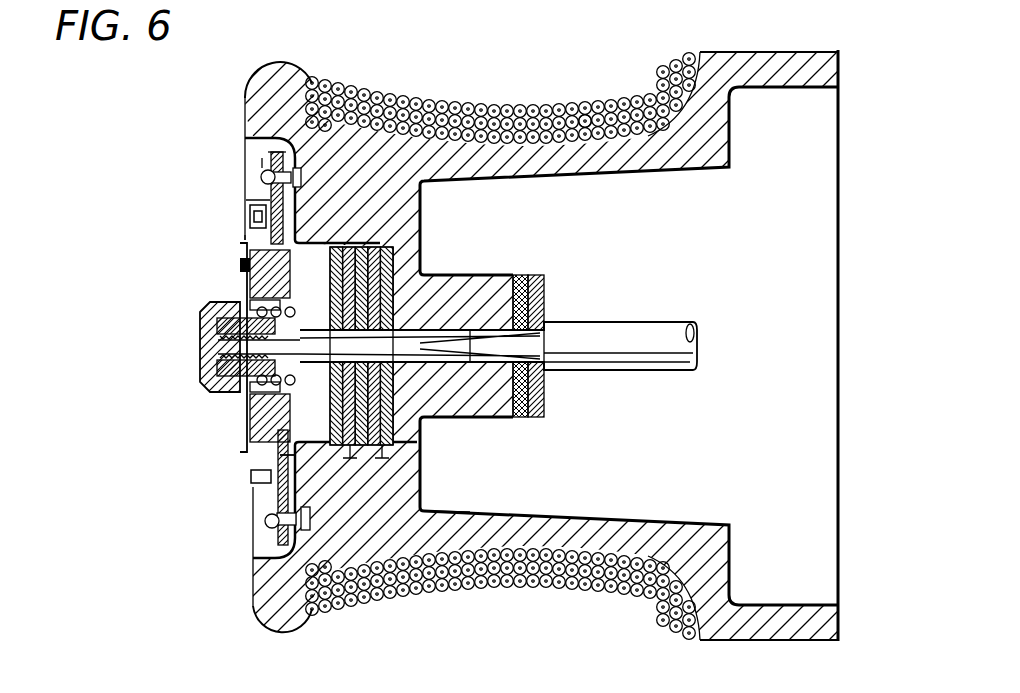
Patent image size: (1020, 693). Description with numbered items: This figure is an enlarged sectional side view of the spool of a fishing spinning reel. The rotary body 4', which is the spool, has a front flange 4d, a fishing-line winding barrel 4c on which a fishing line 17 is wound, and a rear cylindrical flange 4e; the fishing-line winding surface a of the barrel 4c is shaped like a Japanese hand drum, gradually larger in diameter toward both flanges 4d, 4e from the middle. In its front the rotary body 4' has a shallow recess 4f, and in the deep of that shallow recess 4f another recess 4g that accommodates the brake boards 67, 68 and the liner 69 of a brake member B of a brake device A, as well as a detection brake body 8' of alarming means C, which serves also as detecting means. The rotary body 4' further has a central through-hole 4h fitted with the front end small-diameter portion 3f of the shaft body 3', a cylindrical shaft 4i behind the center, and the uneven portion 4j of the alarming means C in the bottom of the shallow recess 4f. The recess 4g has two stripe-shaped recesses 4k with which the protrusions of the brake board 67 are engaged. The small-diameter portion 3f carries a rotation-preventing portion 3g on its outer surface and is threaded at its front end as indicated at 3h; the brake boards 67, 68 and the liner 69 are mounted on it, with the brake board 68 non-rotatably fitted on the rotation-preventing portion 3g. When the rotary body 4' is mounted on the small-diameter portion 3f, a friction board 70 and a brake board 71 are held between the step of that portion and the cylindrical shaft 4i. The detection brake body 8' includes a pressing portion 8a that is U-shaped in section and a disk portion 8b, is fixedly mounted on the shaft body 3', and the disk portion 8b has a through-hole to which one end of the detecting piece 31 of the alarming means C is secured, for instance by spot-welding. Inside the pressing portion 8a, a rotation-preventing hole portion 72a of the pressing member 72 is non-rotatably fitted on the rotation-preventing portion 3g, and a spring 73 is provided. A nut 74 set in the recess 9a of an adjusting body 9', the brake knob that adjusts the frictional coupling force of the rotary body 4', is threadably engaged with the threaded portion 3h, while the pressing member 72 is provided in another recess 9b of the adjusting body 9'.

The rotary body 4' is at (508, 345).
The fishing-line winding barrel 4c is at (630, 140).
The front flange 4d is at (265, 632).
The rear cylindrical flange 4e is at (832, 642).
The shallow recess 4f is at (288, 140).
The recess 4g is at (410, 250).
The through-hole 4h is at (508, 312).
The cylindrical shaft 4i is at (480, 440).
The uneven portion 4j is at (252, 206).
The stripe-shaped recesses 4k is at (270, 474).
The fishing line 17 is at (535, 103).
The fishing-line winding surface a is at (584, 112).
The brake member B is at (356, 232).
The brake board 68 is at (334, 240).
The liner 69 is at (352, 460).
The brake board 67 is at (383, 460).
The friction board 70 is at (520, 420).
The brake board 71 is at (540, 420).
The shaft body 3' is at (498, 387).
The rotation-preventing portion 3g is at (442, 338).
The front end small-diameter portion 3f is at (468, 328).
The threaded portion 3h is at (222, 368).
The adjusting body 9' is at (175, 347).
The recess 9a is at (230, 326).
The recess 9b is at (250, 252).
The pressing member 72 is at (228, 266).
The rotation-preventing hole portion 72a is at (222, 347).
The spring 73 is at (242, 394).
The nut 74 is at (210, 378).
The disk portion 8b is at (270, 158).
The detection brake body 8' is at (246, 494).
The pressing portion 8a is at (280, 454).
The detecting piece 31 is at (270, 182).
The alarming means C is at (248, 164).
The brake device A is at (165, 226).